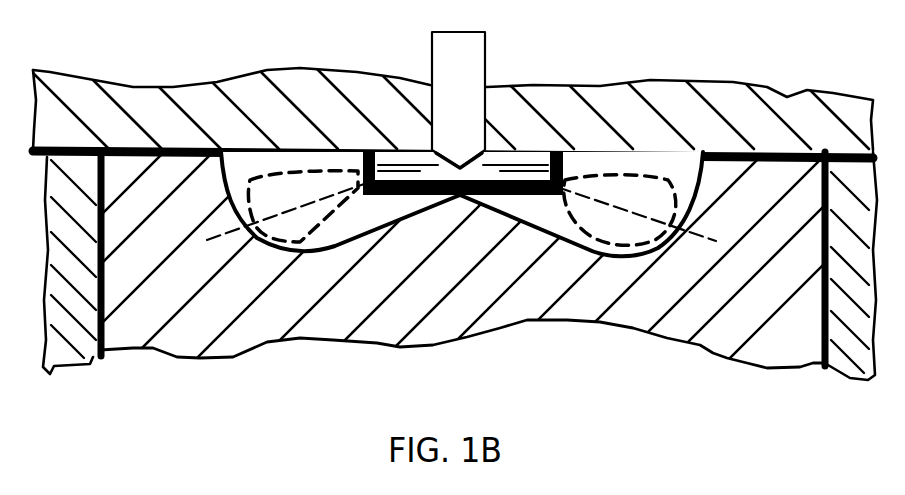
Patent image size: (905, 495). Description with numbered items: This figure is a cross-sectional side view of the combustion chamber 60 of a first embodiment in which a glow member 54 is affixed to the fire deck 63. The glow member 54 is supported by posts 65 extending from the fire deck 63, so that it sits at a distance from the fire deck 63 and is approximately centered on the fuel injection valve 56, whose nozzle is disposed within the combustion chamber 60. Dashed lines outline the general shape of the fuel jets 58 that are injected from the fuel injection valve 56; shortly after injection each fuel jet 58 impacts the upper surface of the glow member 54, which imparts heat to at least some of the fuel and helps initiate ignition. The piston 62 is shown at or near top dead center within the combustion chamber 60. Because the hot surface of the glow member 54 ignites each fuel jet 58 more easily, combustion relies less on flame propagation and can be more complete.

The glow member 54 is at (440, 190).
The fuel injection valve 56 is at (458, 102).
The fuel jets 58 is at (660, 187).
The combustion chamber 60 is at (595, 258).
The piston 62 is at (518, 268).
The fire deck 63 is at (578, 150).
The posts 65 is at (520, 152).